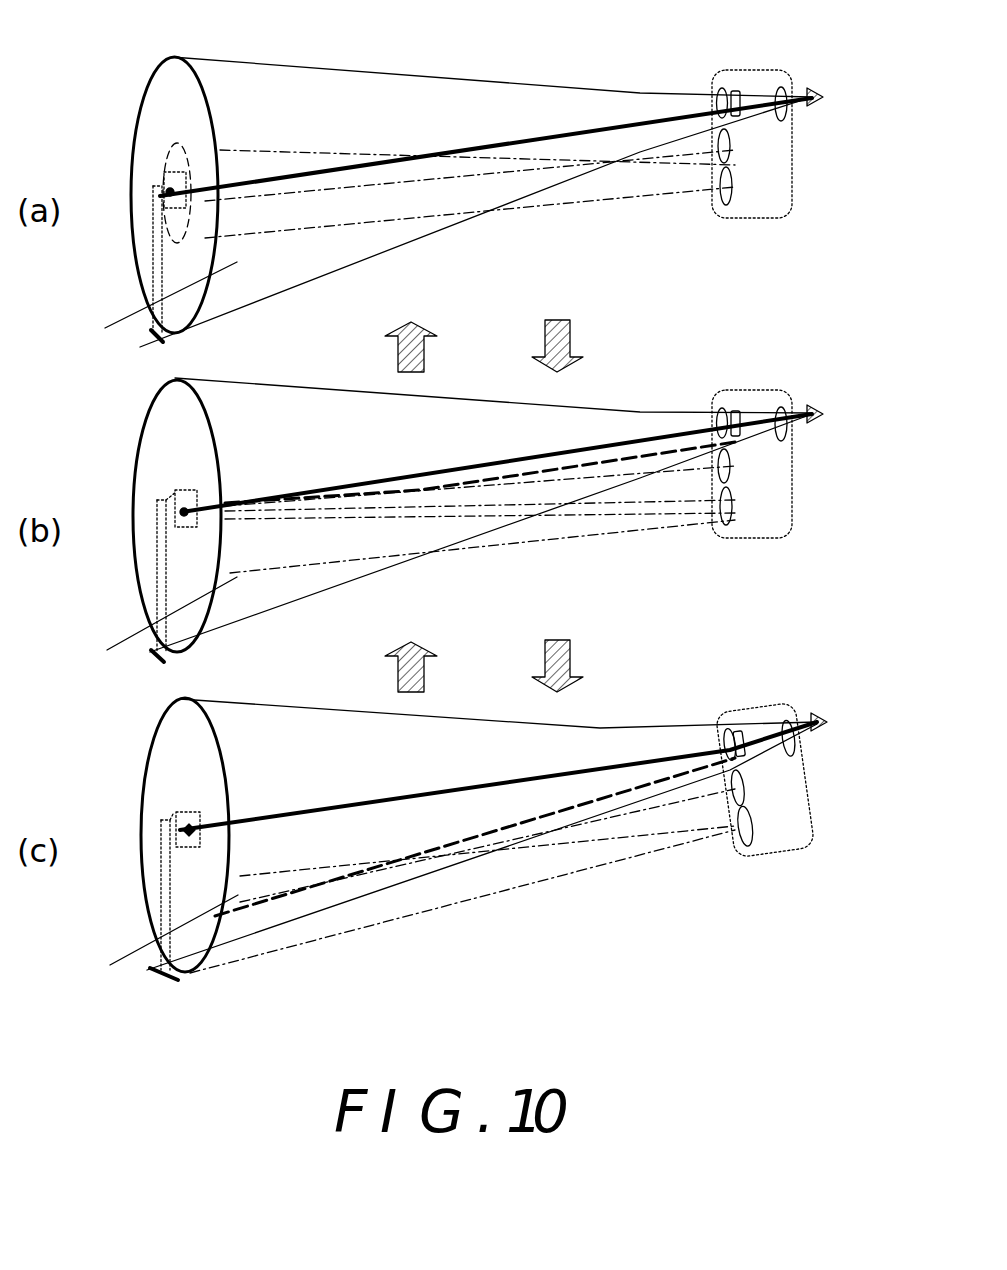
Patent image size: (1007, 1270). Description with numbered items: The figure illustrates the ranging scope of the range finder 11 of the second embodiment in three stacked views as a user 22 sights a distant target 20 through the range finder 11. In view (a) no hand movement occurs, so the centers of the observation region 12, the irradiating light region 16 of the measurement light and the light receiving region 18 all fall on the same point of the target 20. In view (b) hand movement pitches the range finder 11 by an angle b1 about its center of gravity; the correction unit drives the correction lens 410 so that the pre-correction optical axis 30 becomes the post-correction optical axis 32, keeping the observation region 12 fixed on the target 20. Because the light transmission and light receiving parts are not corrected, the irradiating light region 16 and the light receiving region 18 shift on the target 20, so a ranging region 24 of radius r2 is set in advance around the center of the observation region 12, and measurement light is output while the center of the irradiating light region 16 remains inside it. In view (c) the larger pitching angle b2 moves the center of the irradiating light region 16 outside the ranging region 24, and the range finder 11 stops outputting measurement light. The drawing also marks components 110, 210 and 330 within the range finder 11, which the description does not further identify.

The range finder 11 is at (808, 29).
The observation region 12 is at (178, 498).
The irradiating light region 16 is at (132, 563).
The light receiving region 18 is at (188, 584).
The target 20 is at (209, 470).
The user 22 is at (836, 137).
The ranging region 24 is at (187, 470).
The pre-correction optical axis 30 is at (462, 561).
The post-correction optical axis 32 is at (478, 513).
The first light receiving element 110 is at (700, 520).
The second light receiving element 210 is at (752, 539).
The third element 330 is at (695, 394).
The correction lens 410 is at (754, 392).
The radius of the ranging region r2 is at (144, 193).
The pitching angle b1 is at (713, 540).
The pitching angle b2 is at (733, 853).